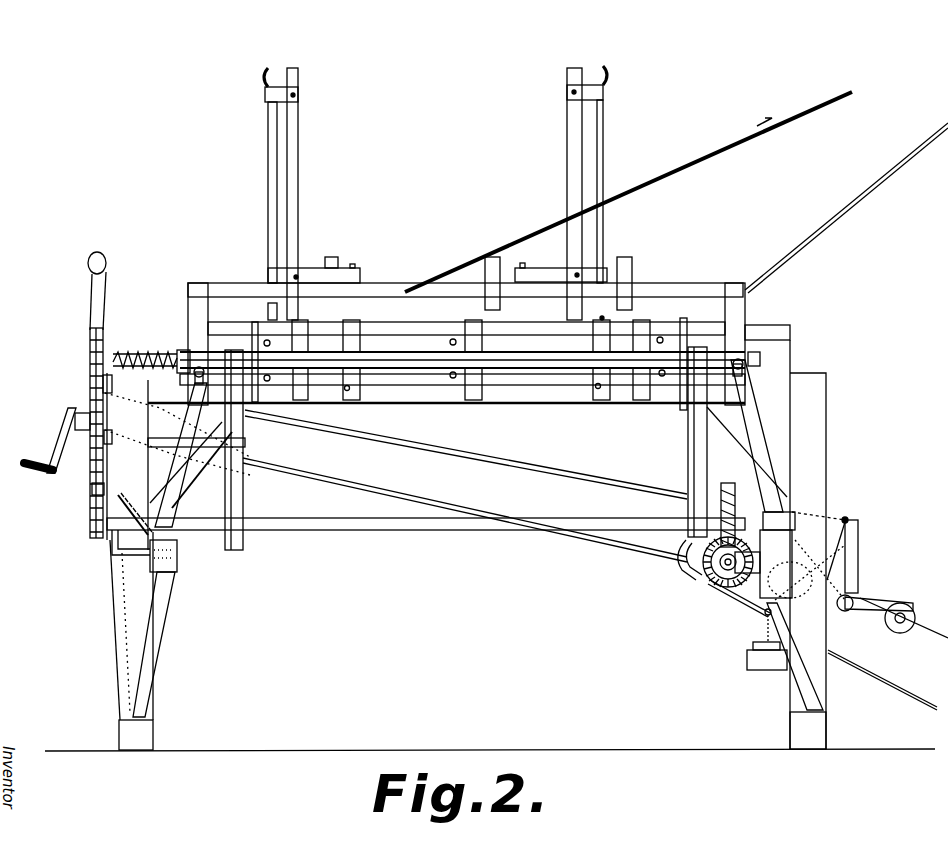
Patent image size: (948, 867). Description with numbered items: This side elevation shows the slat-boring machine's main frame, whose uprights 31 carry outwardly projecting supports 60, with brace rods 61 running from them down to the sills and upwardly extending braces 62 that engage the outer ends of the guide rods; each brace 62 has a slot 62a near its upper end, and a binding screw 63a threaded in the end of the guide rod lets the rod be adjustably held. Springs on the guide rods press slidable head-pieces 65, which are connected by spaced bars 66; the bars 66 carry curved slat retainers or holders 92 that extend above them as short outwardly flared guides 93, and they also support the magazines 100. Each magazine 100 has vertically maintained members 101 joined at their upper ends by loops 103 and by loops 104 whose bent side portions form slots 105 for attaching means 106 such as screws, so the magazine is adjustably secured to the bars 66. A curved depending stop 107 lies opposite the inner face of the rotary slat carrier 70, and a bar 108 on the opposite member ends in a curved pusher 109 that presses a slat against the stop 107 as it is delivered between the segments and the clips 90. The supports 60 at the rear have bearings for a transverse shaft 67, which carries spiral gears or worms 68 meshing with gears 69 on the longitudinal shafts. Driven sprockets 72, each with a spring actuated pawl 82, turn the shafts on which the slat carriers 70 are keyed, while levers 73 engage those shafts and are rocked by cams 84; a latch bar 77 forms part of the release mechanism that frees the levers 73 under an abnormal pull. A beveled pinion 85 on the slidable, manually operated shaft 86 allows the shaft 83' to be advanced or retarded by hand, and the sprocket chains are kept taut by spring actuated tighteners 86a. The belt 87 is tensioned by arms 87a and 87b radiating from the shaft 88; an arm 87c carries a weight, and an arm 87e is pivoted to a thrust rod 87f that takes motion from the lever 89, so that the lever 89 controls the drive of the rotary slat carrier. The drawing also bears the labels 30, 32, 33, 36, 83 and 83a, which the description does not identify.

The base blocks 30 is at (153, 722).
The uprights 31 is at (826, 455).
The left upright leg 32 is at (152, 698).
The side beam 33 is at (790, 340).
The inclined conveyor bar 36 is at (742, 133).
The outwardly projecting supports 60 is at (178, 559).
The brace rods 61 is at (162, 616).
The upwardly extending braces 62 is at (176, 499).
The slot 62a is at (195, 410).
The binding screw 63a is at (196, 382).
The slidable head-pieces 65 is at (188, 310).
The spaced bars 66 is at (228, 292).
The transverse shaft 67 is at (712, 590).
The spiral gears or worms 68 is at (705, 582).
The gears 69 is at (721, 500).
The rotary work holders or slat carriers 70 is at (527, 392).
The driven sprockets 72 is at (90, 353).
The levers 73 is at (243, 499).
The latch bar 77 is at (759, 351).
The spring actuated pawl 82 is at (103, 393).
The spring block 83 is at (162, 356).
The shaft 83' is at (423, 541).
The hand crank 83a is at (86, 433).
The cams 84 is at (238, 546).
The beveled pinion 85 is at (745, 308).
The manually operated shaft 86 is at (375, 485).
The spring actuated tightener 86a is at (118, 546).
The belt 87 is at (870, 600).
The belt tightener arm 87a is at (893, 603).
The belt tightener arm 87b is at (858, 560).
The weight arm 87c is at (745, 625).
The arm 87e is at (858, 521).
The thrust rod 87f is at (592, 473).
The shaft 88 is at (848, 612).
The lever 89 is at (104, 292).
The clips 90 is at (352, 343).
The slat retainers or holders 92 is at (308, 311).
The outwardly flared guides 93 is at (333, 257).
The magazines 100 is at (268, 165).
The vertically maintained members 101 is at (298, 195).
The loops 103 is at (298, 95).
The loops 104 is at (310, 268).
The slots 105 is at (362, 274).
The attaching means 106 is at (352, 264).
The curved depending stops 107 is at (268, 312).
The bar 108 is at (600, 307).
The pusher 109 is at (598, 320).